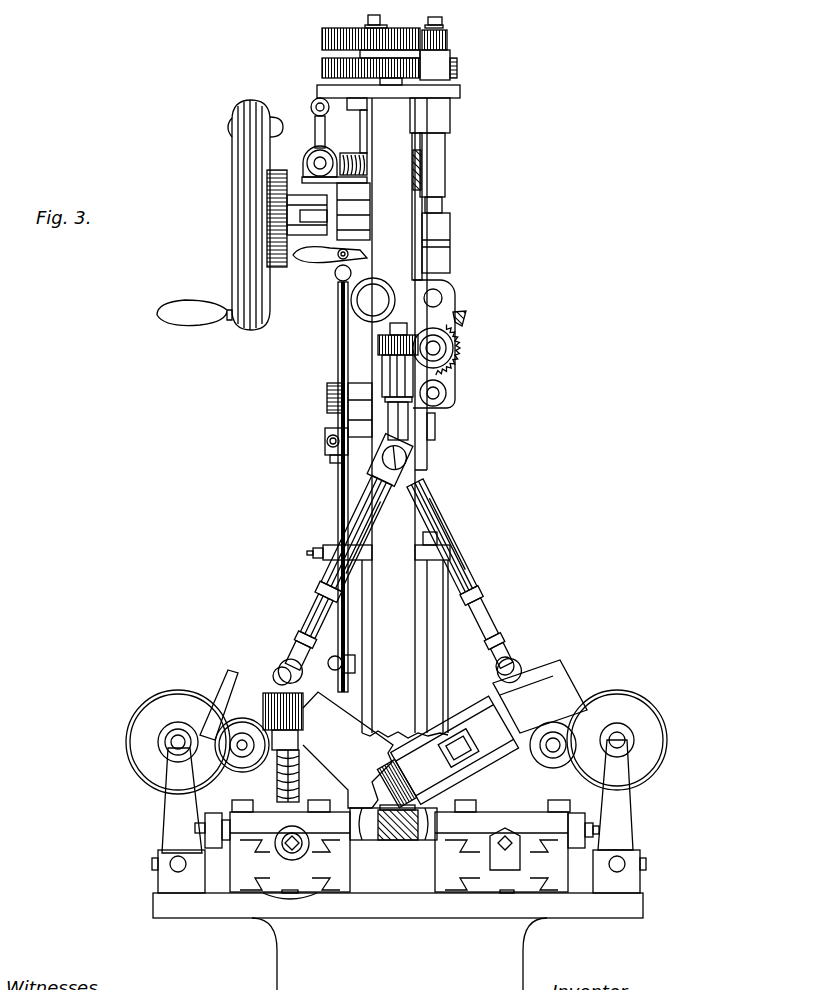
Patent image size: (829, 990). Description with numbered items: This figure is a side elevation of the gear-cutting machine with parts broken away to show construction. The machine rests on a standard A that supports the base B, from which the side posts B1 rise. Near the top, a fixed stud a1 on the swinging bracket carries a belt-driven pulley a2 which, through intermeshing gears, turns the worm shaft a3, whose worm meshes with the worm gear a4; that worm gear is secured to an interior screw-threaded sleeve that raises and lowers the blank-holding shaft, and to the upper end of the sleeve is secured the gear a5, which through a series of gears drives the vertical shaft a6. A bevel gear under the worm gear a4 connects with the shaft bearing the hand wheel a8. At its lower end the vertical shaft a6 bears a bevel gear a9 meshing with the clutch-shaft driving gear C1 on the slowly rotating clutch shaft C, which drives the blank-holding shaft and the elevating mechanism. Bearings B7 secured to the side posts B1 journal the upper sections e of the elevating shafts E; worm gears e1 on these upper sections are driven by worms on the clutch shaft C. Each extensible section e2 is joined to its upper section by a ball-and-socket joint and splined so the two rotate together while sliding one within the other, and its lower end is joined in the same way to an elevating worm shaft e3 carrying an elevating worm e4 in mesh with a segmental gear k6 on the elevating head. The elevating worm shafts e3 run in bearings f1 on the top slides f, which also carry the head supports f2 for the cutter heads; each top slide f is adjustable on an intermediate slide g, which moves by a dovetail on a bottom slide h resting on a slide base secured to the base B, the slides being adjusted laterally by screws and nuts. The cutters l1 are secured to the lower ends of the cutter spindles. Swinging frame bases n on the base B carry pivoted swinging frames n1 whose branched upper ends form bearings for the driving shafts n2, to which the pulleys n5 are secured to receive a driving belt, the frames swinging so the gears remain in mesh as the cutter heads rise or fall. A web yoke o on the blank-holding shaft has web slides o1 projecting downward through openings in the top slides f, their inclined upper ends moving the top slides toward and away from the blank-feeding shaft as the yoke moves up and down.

The fixed stud a1 is at (310, 90).
The pulley a2 is at (317, 92).
The worm shaft a3 is at (302, 170).
The worm gear a4 is at (352, 153).
The gear a5 is at (322, 62).
The vertical shaft a6 is at (442, 206).
The hand wheel a8 is at (232, 196).
The bevel gear a9 is at (465, 318).
The clutch shaft C is at (436, 350).
The clutch-shaft driving gear C1 is at (460, 363).
The bearings for the elevating shafts B7 is at (413, 383).
The side posts B1 is at (377, 418).
The base B is at (379, 904).
The standard A is at (399, 954).
The upper section of elevating shaft e is at (394, 421).
The worm gear e1 is at (417, 334).
The extensible section e2 is at (361, 510).
The elevating worm shaft e3 is at (280, 665).
The elevating worm e4 is at (302, 766).
The web yoke o is at (450, 553).
The web slides o1 is at (455, 646).
The elevating shafts E is at (399, 581).
The swinging frame bases n is at (395, 871).
The swinging frames n1 is at (176, 814).
The driving shafts n2 is at (178, 742).
The pulleys n5 is at (134, 705).
The top slides f is at (238, 818).
The bearings for the elevating worm shafts f1 is at (303, 728).
The head supports f2 is at (348, 750).
The segmental gear k6 is at (300, 782).
The cutters l1 is at (385, 769).
The intermediate slide g is at (389, 847).
The bottom slides h is at (322, 852).